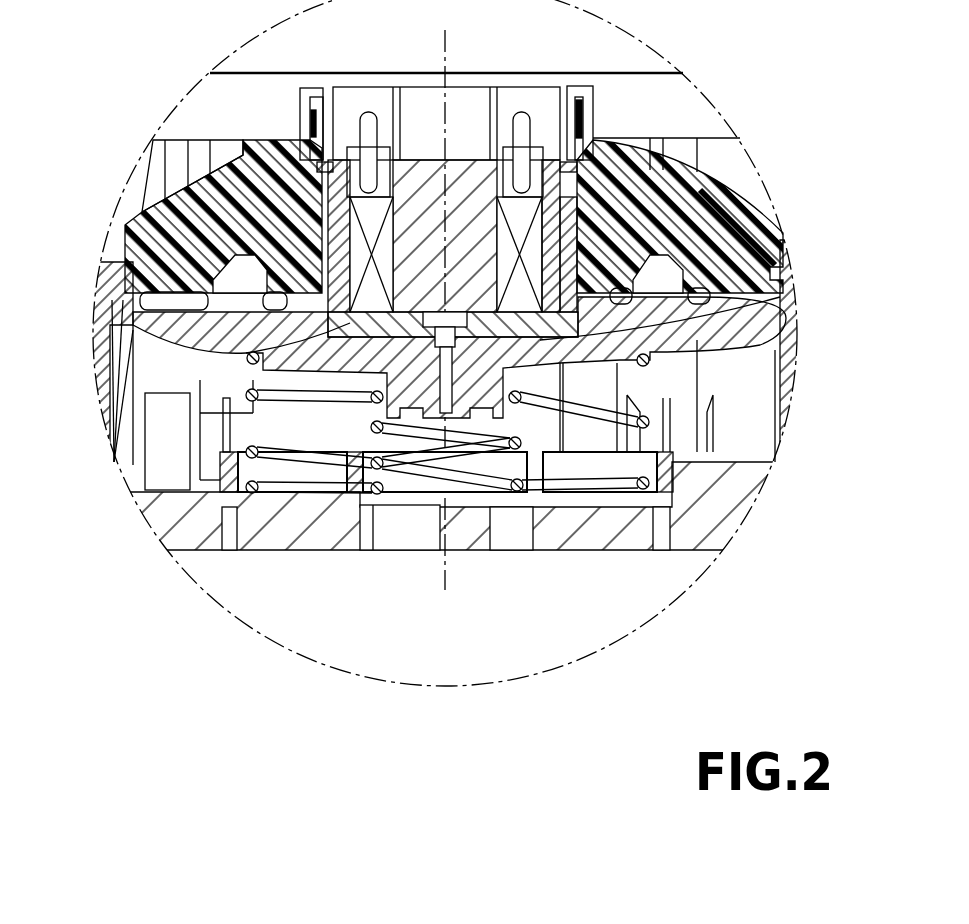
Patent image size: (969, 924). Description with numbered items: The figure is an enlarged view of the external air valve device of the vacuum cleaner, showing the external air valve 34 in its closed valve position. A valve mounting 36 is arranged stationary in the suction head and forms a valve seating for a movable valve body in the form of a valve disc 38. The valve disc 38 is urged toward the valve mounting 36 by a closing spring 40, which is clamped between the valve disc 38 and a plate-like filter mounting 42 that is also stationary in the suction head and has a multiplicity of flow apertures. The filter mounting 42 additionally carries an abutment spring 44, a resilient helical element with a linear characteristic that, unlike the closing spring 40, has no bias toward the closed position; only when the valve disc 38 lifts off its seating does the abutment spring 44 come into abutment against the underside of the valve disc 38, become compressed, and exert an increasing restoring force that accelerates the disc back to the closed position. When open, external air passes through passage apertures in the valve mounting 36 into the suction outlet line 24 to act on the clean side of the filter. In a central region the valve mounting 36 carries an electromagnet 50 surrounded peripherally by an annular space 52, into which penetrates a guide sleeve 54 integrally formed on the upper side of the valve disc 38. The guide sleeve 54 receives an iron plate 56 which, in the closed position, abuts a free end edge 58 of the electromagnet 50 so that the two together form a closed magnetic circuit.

The suction outlet line 24 is at (167, 447).
The external air valve 34 is at (745, 180).
The valve mounting 36 is at (762, 240).
The valve disc 38 is at (560, 363).
The closing spring 40 is at (623, 495).
The filter mounting 42 is at (717, 525).
The abutment spring 44 is at (402, 462).
The electromagnet 50 is at (518, 188).
The annular space 52 is at (318, 240).
The guide sleeve 54 is at (310, 270).
The iron plate 56 is at (246, 358).
The free end edge 58 is at (637, 340).